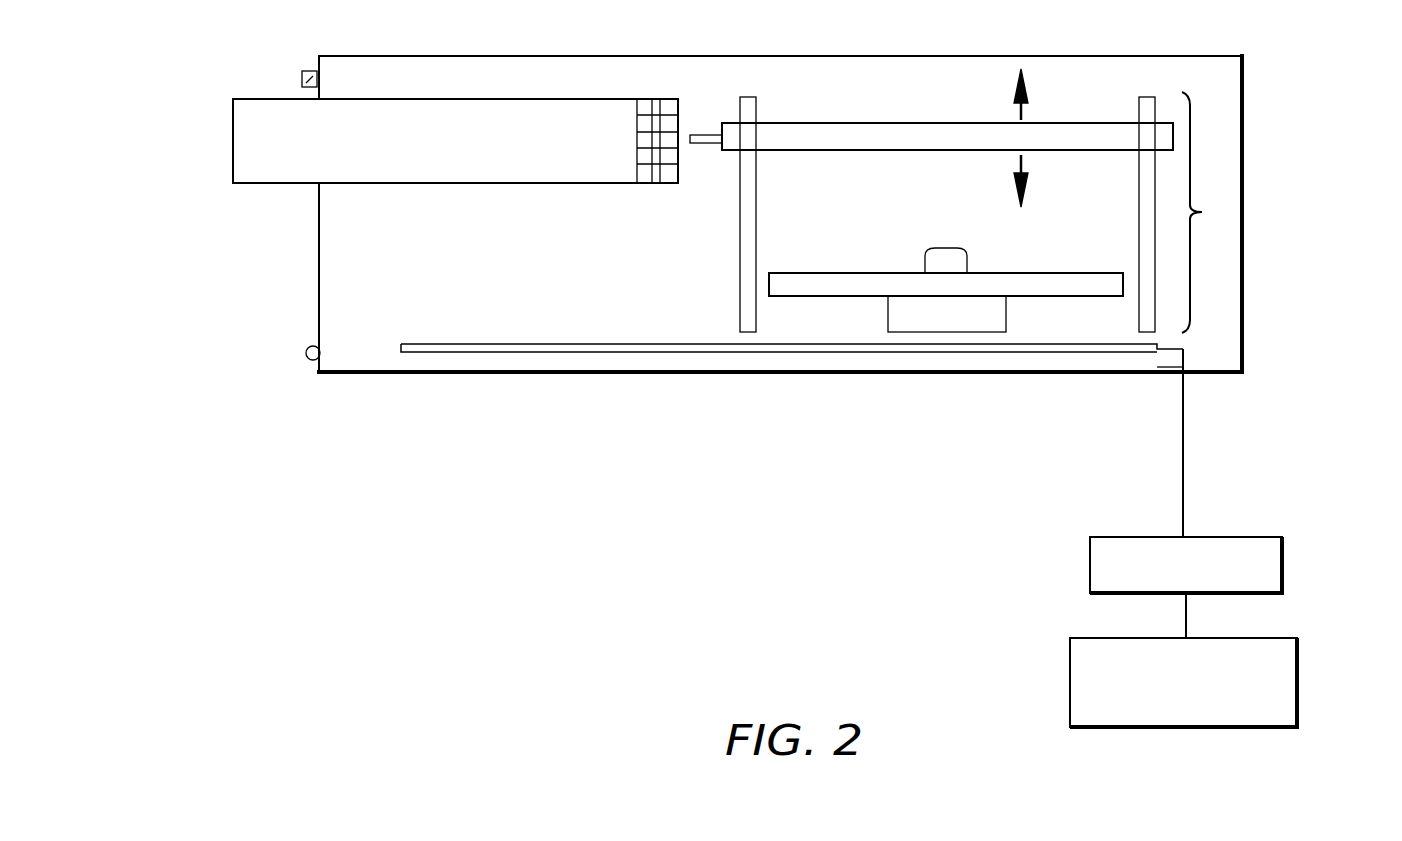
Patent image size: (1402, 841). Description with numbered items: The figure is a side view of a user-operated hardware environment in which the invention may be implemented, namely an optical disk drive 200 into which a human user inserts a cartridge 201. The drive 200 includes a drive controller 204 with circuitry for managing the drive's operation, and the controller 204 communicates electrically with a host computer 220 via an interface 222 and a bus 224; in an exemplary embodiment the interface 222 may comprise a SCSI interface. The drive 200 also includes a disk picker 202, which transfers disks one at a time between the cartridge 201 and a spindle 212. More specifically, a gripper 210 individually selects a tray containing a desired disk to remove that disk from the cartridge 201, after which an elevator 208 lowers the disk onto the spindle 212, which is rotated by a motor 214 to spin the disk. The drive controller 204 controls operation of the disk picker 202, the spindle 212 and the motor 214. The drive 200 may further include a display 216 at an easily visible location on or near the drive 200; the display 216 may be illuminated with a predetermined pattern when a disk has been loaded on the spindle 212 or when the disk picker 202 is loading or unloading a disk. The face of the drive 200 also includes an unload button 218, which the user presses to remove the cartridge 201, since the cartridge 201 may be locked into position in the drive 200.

The disk drive 200 is at (208, 548).
The cartridge 201 is at (266, 115).
The disk picker 202 is at (1202, 212).
The drive controller 204 is at (522, 352).
The elevator 208 is at (892, 140).
The gripper 210 is at (707, 143).
The spindle 212 is at (945, 260).
The motor 214 is at (992, 308).
The display 216 is at (307, 357).
The unload button 218 is at (320, 58).
The host computer 220 is at (1298, 667).
The interface 222 is at (1283, 565).
The bus 224 is at (1185, 470).